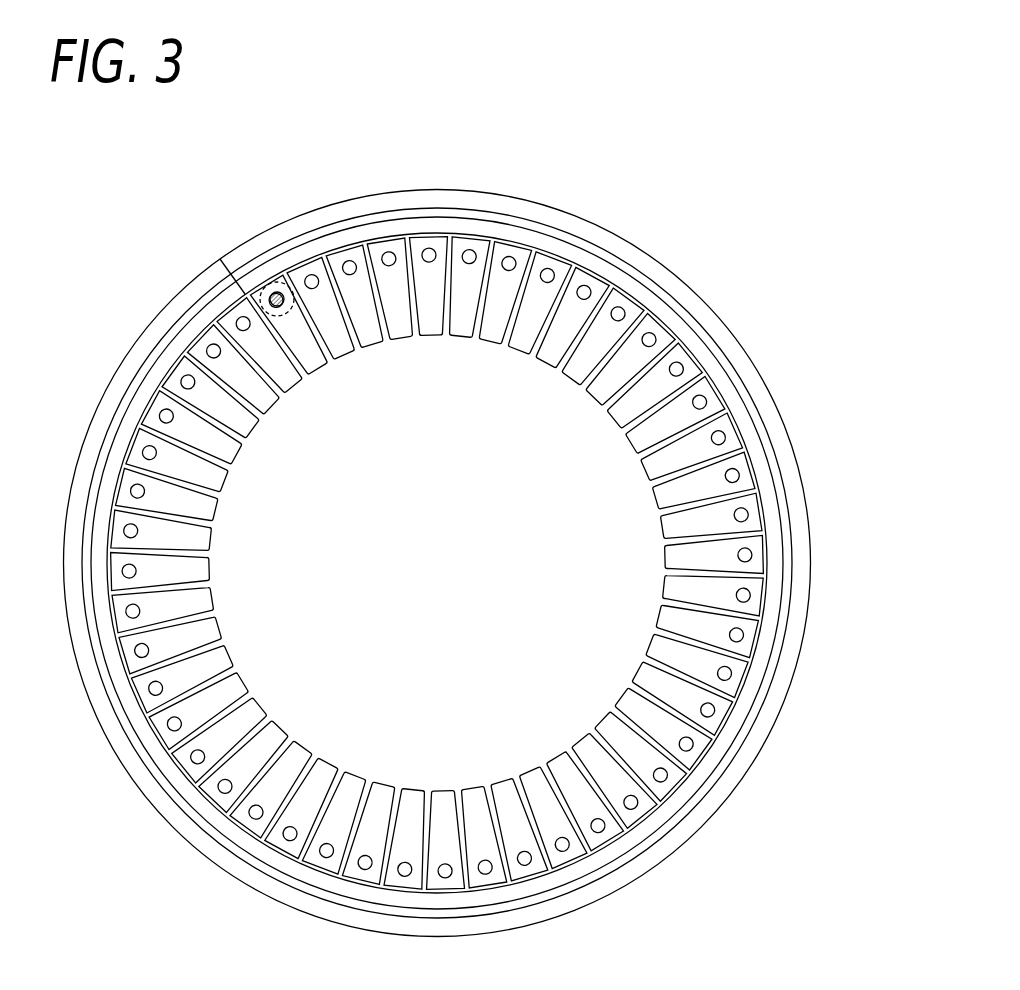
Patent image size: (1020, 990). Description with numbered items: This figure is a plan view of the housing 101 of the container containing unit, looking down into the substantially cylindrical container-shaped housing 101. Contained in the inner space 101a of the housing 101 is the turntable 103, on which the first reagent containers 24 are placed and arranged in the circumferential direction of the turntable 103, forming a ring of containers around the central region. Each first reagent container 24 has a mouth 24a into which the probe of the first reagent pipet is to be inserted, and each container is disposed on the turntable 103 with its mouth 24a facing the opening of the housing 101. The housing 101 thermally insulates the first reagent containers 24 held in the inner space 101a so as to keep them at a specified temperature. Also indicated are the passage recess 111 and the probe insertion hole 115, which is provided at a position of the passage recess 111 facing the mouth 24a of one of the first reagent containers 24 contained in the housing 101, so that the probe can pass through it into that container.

The housing 101 is at (630, 245).
The inner space 101a is at (688, 354).
The turntable 103 is at (533, 542).
The passage recess 111 is at (250, 262).
The probe insertion hole 115 is at (280, 291).
The first reagent container 24 is at (700, 762).
The mouth 24a is at (697, 742).